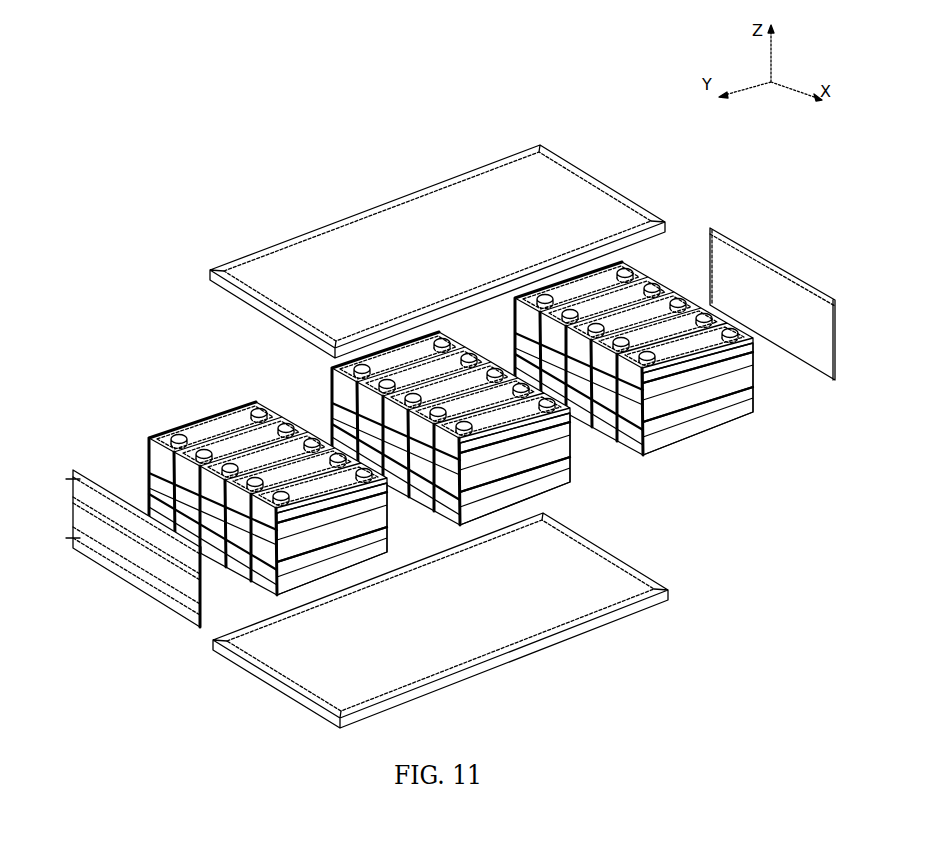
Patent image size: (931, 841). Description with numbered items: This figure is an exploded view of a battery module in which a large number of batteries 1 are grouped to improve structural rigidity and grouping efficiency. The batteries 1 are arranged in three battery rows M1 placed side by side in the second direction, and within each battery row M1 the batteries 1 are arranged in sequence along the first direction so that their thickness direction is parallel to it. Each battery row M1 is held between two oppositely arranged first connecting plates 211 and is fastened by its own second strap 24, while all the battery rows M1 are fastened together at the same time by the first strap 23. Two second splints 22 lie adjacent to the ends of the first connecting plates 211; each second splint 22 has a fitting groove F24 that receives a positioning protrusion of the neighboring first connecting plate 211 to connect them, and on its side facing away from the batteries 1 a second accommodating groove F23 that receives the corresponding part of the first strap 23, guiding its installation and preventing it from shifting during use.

The battery 1 is at (280, 413).
The battery row M1 is at (681, 280).
The first connecting plate 211 is at (213, 412).
The second strap 24 is at (240, 553).
The first strap 23 is at (408, 197).
The second splint 22 is at (775, 248).
The second accommodating groove F23 is at (70, 538).
The fitting groove F24 is at (70, 479).